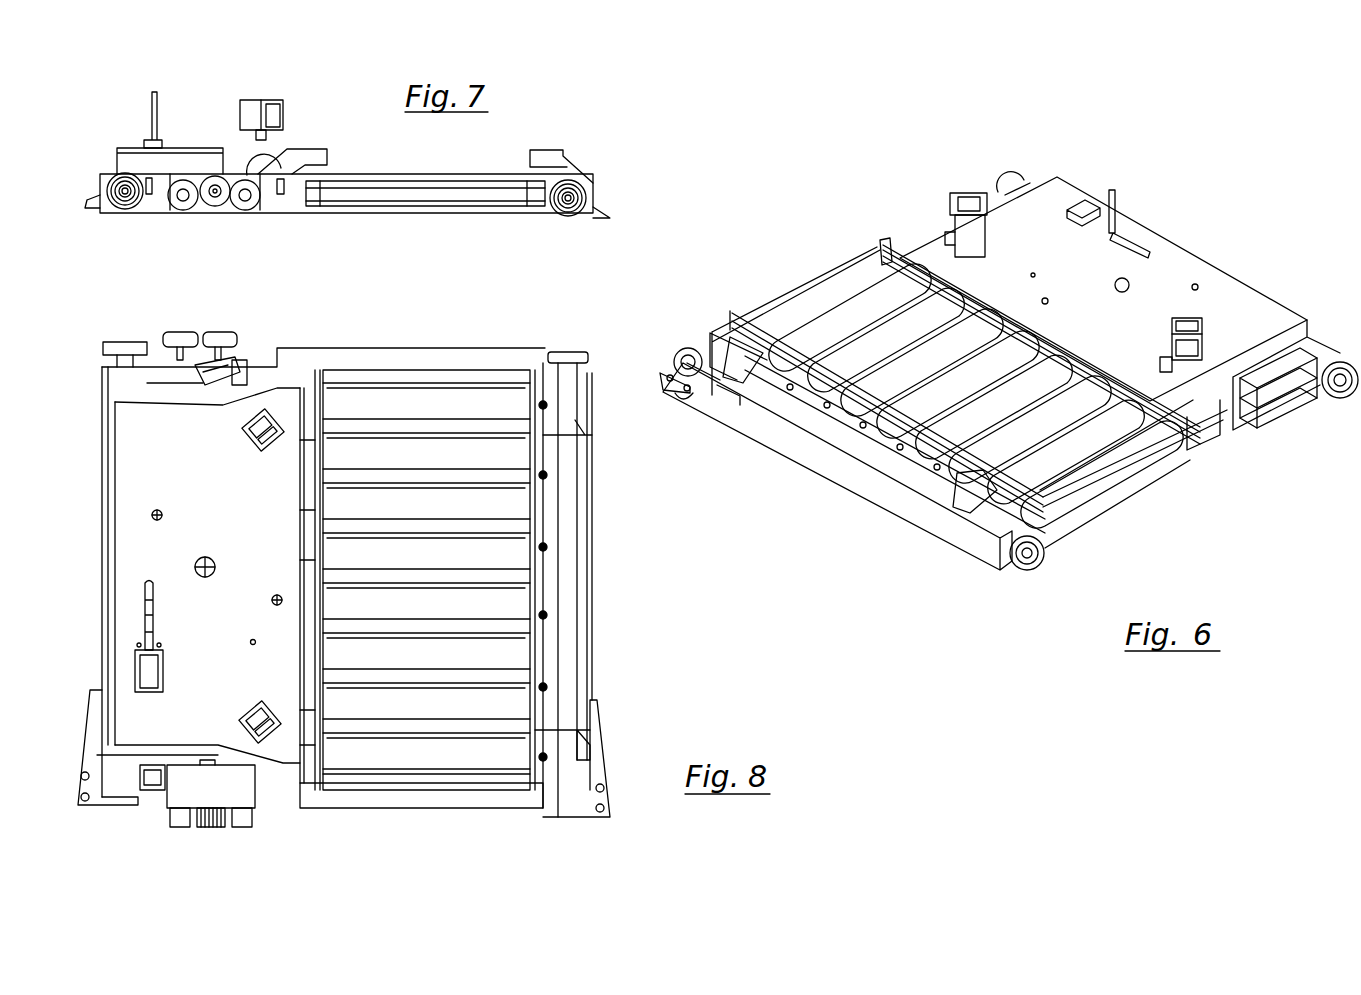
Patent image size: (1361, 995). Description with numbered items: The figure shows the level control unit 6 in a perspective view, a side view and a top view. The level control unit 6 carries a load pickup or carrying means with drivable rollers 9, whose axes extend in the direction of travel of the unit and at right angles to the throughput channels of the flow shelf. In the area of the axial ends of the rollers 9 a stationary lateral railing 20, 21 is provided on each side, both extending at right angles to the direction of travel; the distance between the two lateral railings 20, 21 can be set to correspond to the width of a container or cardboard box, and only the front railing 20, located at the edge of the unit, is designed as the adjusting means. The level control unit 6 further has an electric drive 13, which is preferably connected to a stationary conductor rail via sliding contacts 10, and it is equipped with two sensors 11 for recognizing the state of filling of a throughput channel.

In FIG. 6, the level control unit 6 is at (790, 152).
In FIG. 8, the drivable rollers 9 is at (428, 410).
In FIG. 6, the drivable rollers 9 is at (1085, 470).
In FIG. 6, the sliding contacts 10 is at (1273, 430).
In FIG. 7, the sensors 11 is at (270, 100).
In FIG. 8, the sensors 11 is at (250, 447).
In FIG. 6, the sensors 11 is at (960, 193).
In FIG. 7, the electric drive 13 is at (213, 207).
In FIG. 7, the front lateral railing 20 is at (533, 150).
In FIG. 6, the front lateral railing 20 is at (740, 313).
In FIG. 7, the lateral railing 21 is at (322, 147).
In FIG. 6, the lateral railing 21 is at (881, 240).